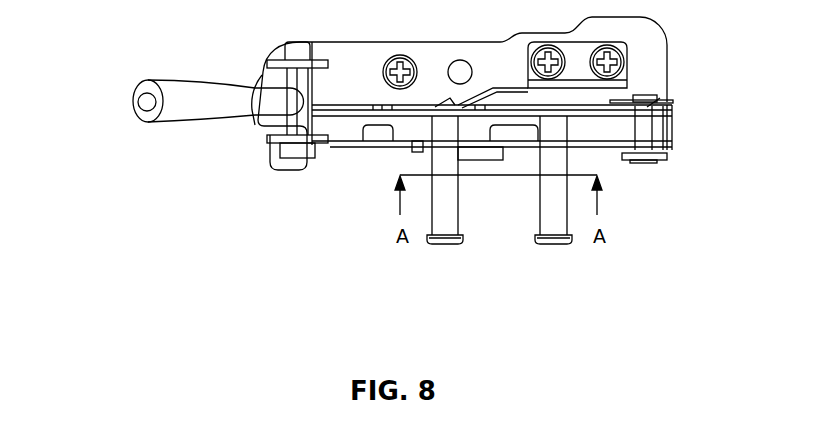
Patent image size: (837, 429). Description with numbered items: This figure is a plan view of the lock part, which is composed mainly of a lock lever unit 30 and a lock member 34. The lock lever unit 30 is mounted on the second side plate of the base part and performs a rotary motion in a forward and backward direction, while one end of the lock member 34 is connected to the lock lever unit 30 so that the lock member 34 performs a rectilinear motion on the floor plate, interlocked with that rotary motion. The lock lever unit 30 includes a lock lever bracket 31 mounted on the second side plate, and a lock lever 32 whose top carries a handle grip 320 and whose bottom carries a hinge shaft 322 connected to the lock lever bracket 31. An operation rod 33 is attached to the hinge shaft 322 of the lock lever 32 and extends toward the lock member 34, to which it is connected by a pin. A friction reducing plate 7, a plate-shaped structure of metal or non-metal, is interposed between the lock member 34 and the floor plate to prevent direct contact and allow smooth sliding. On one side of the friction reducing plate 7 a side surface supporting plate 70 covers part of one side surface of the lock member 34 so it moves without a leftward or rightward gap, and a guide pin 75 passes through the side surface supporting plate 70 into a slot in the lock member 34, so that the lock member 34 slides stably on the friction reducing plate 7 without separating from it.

The friction reducing plate 7 is at (650, 58).
The lock lever unit 30 is at (88, 40).
The lock lever bracket 31 is at (295, 135).
The lock lever 32 is at (136, 143).
The operation rod 33 is at (312, 90).
The lock member 34 is at (345, 147).
The handle grip 320 is at (200, 110).
The hinge shaft 322 is at (260, 125).
The side surface supporting plate 70 is at (665, 155).
The guide pin 75 is at (643, 163).